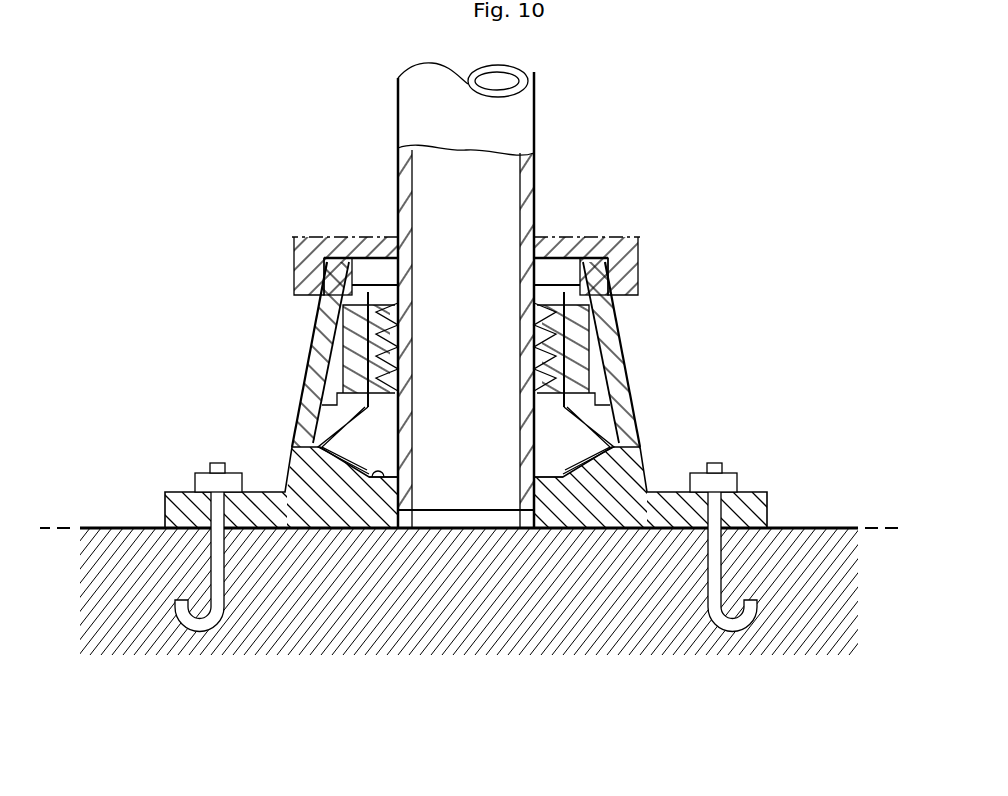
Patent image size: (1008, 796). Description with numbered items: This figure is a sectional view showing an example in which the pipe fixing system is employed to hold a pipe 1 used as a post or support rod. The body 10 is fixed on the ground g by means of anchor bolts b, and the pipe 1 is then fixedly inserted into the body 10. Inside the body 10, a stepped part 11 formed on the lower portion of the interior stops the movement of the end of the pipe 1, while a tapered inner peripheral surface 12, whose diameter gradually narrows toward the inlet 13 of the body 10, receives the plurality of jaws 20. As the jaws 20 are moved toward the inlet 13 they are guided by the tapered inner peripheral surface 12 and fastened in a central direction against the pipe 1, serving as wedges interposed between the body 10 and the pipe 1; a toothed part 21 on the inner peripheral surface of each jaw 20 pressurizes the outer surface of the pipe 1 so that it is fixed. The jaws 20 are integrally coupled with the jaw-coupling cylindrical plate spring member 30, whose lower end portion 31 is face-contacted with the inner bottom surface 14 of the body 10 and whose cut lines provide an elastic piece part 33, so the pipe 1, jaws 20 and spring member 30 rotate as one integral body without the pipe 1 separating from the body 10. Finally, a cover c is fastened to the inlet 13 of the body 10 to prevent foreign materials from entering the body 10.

The pipe 1 is at (520, 115).
The cover c is at (627, 241).
The inlet 13 is at (358, 268).
The jaw-coupling cylindrical plate spring member 30 is at (606, 289).
The jaws 20 is at (350, 337).
The toothed part 21 is at (398, 352).
The tapered inner peripheral surface 12 is at (340, 388).
The elastic piece part 33 is at (645, 445).
The lower end portion 31 is at (562, 476).
The inner bottom surface 14 is at (386, 478).
The stepped part 11 is at (402, 486).
The body 10 is at (287, 462).
The anchor bolts b is at (228, 625).
The ground g is at (120, 635).